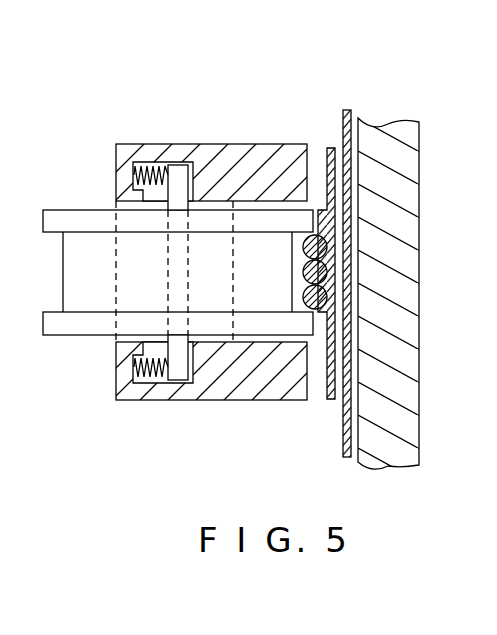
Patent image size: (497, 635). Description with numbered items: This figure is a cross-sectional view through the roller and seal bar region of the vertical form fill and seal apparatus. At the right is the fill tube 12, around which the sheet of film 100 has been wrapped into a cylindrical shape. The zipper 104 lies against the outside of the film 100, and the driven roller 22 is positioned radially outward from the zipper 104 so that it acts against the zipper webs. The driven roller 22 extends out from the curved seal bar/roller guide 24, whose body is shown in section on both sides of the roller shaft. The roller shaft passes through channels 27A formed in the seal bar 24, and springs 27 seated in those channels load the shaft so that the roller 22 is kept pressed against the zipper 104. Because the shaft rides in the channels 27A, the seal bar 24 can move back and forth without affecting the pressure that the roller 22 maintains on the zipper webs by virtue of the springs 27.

The fill tube 12 is at (385, 137).
The driven roller 22 is at (92, 218).
The curved seal bar/roller guide 24 is at (232, 148).
The spring 27 is at (150, 170).
The channel 27A is at (157, 381).
The film 100 is at (345, 118).
The zipper 104 is at (330, 148).